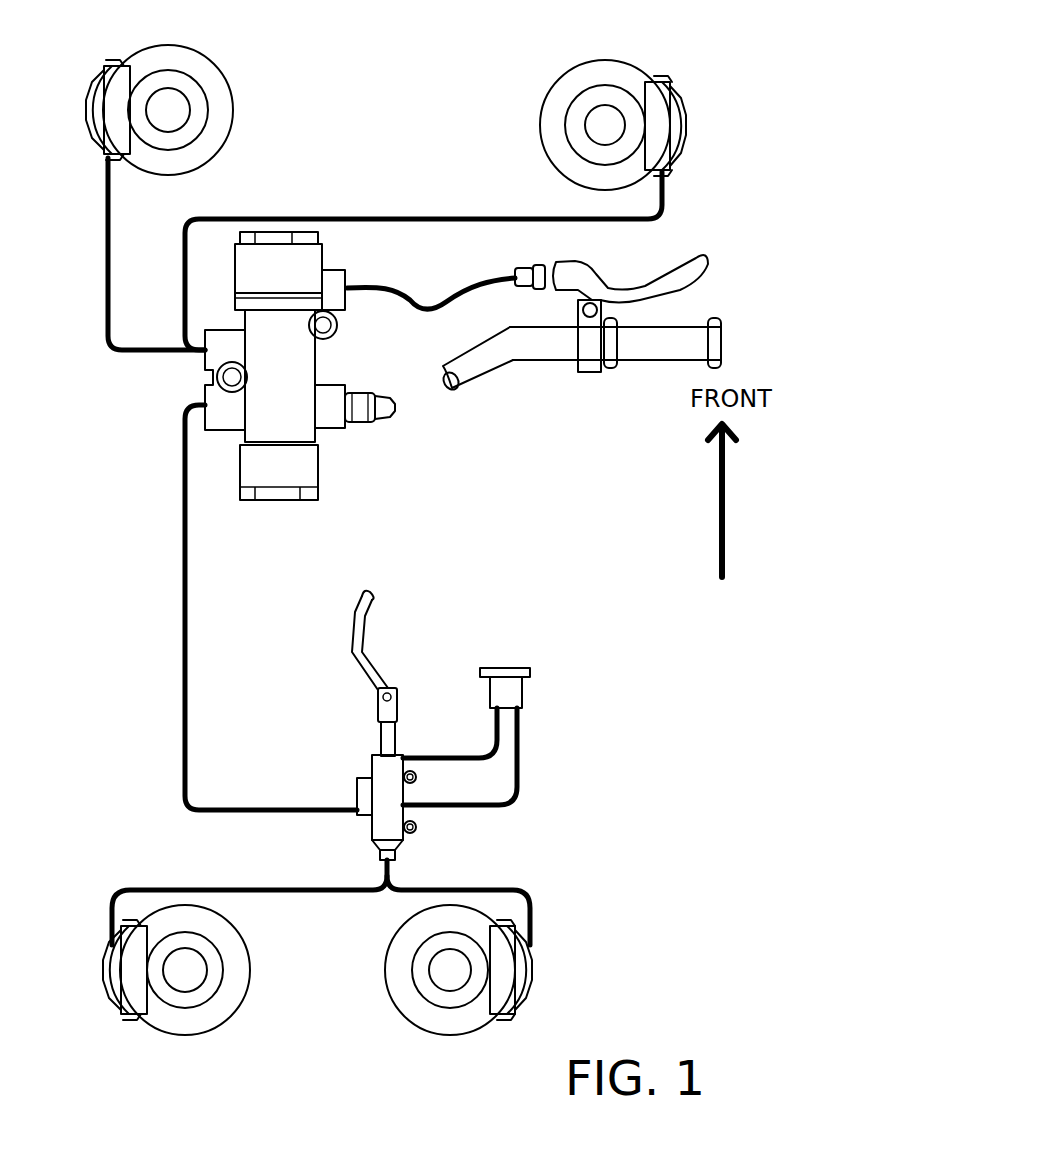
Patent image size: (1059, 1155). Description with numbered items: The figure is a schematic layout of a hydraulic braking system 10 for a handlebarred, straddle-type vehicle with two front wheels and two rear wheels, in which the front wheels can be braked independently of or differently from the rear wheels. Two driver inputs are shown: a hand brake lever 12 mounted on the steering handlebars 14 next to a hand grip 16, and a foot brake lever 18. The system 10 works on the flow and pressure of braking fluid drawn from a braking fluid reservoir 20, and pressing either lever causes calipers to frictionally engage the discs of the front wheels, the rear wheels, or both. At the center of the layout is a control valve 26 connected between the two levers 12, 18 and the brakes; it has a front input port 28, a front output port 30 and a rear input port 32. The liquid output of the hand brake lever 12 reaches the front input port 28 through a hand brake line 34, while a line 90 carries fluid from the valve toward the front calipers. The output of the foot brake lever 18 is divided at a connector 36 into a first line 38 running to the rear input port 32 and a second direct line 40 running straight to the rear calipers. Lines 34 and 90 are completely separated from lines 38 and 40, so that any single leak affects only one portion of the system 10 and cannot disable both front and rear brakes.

The braking system 10 is at (387, 95).
The hand brake lever 12 is at (636, 266).
The steering handlebars 14 is at (486, 374).
The hand grip 16 is at (680, 325).
The foot brake lever 18 is at (372, 665).
The braking fluid reservoir 20 is at (510, 686).
The control valve 26 is at (277, 410).
The front input port 28 is at (334, 288).
The front output port 30 is at (210, 358).
The rear input port 32 is at (234, 412).
The hand brake line 34 is at (456, 290).
The connector 36 is at (380, 826).
The first line 38 is at (188, 695).
The second direct line 40 is at (398, 886).
The front brake line 90 is at (352, 217).